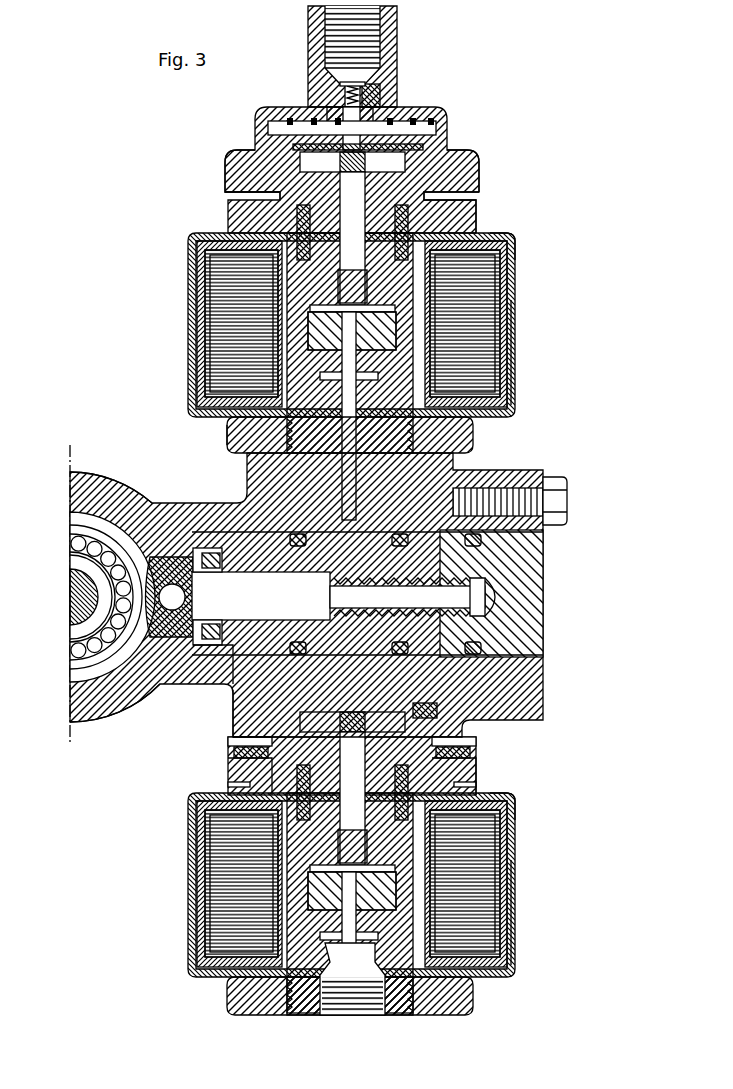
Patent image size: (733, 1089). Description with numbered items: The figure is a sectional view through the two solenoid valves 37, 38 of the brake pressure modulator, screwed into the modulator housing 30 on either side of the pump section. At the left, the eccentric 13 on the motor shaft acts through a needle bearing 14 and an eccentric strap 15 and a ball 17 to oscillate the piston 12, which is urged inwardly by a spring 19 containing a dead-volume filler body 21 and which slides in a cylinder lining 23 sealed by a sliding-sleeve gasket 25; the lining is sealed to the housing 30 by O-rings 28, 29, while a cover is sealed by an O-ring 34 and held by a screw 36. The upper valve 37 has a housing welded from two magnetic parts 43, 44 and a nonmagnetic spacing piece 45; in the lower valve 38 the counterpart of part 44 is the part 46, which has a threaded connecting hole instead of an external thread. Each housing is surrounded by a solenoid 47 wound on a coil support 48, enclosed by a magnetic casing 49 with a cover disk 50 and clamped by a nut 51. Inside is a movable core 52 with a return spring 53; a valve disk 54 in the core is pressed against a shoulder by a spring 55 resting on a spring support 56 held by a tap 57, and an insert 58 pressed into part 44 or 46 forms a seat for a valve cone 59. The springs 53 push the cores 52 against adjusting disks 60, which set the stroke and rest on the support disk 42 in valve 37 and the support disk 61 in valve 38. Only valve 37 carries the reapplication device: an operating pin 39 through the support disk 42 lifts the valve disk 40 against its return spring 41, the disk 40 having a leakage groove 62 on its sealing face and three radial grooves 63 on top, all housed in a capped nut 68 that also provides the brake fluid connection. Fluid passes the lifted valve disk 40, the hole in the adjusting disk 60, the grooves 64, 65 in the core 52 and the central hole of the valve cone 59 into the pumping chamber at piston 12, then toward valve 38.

The piston 12 is at (243, 600).
The eccentric 13 is at (78, 588).
The needle bearing 14 is at (80, 554).
The eccentric strap 15 is at (78, 526).
The ball 17 is at (178, 540).
The spring 19 is at (490, 572).
The body 21 is at (483, 595).
The cylinder lining 23 is at (200, 653).
The sliding-sleeve gasket 25 is at (212, 550).
The O-ring 28 is at (250, 717).
The O-ring 29 is at (483, 651).
The housing 30 is at (88, 482).
The O-ring 34 is at (527, 620).
The screw 36 is at (569, 490).
The solenoid valve 37 is at (532, 346).
The solenoid valve 38 is at (532, 879).
The operating pin 39 is at (300, 125).
The valve disk 40 is at (322, 110).
The return spring 41 is at (340, 85).
The support disk 42 is at (300, 145).
The valve housing part 43 is at (473, 205).
The valve housing part 44 is at (473, 436).
The spacing piece 45 is at (465, 303).
The valve housing part 46 is at (393, 1012).
The solenoid 47 is at (470, 337).
The coil support 48 is at (504, 258).
The casing 49 is at (514, 388).
The cover disk 50 is at (502, 233).
The nut 51 is at (227, 437).
The movable core 52 is at (312, 209).
The return spring 53 is at (300, 215).
The valve disk 54 is at (320, 312).
The spring 55 is at (335, 307).
The spring support 56 is at (457, 184).
The tap 57 is at (303, 189).
The insert 58 is at (335, 382).
The valve cone 59 is at (325, 372).
The adjusting disk 60 is at (447, 126).
The support disk 61 is at (437, 710).
The groove 62 is at (383, 98).
The radial grooves 63 is at (372, 78).
The groove 64 is at (290, 168).
The groove 65 is at (320, 335).
The capped nut 68 is at (394, 40).